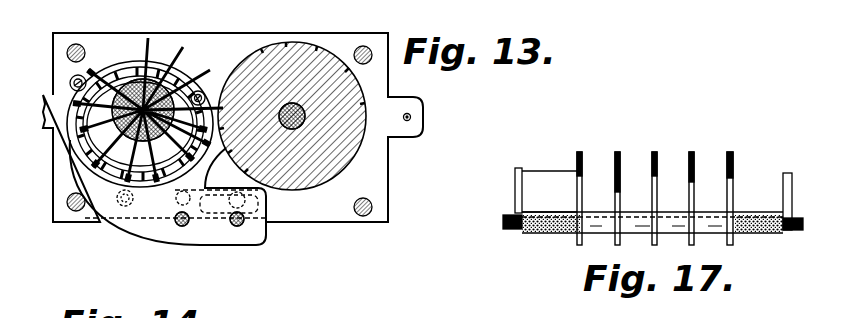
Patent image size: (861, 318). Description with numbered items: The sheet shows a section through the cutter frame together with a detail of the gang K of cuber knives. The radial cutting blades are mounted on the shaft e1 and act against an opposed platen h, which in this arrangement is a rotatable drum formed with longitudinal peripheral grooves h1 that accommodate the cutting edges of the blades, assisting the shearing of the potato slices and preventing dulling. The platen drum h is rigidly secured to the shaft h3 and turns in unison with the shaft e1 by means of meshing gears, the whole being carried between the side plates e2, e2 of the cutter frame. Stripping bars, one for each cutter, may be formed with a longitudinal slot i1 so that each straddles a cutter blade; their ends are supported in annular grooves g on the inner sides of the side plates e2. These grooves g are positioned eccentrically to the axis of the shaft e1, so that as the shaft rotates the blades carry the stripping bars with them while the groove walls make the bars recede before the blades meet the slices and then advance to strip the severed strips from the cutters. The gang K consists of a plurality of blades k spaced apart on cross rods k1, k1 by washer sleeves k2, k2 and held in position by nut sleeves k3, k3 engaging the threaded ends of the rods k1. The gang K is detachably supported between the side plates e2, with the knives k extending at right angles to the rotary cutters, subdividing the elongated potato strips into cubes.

In FIG. 13, the annular grooves g is at (88, 148).
In FIG. 13, the platen h is at (333, 153).
In FIG. 13, the longitudinal peripheral grooves h1 is at (236, 72).
In FIG. 13, the shaft h3 is at (293, 120).
In FIG. 13, the side plates e2 is at (140, 45).
In FIG. 17, the side plates e2 is at (516, 186).
In FIG. 13, the shaft e1 is at (140, 124).
In FIG. 13, the longitudinal slot i1 is at (148, 110).
In FIG. 13, the cuber knives k is at (168, 192).
In FIG. 17, the cuber knives k is at (606, 195).
In FIG. 13, the gang of cuber knives K is at (232, 270).
In FIG. 17, the gang of cuber knives K is at (549, 182).
In FIG. 13, the cross rods k1 is at (176, 224).
In FIG. 17, the cross rods k1 is at (503, 222).
In FIG. 13, the washer sleeves k2 is at (186, 228).
In FIG. 17, the washer sleeves k2 is at (632, 212).
In FIG. 17, the nut sleeves k3 is at (532, 233).